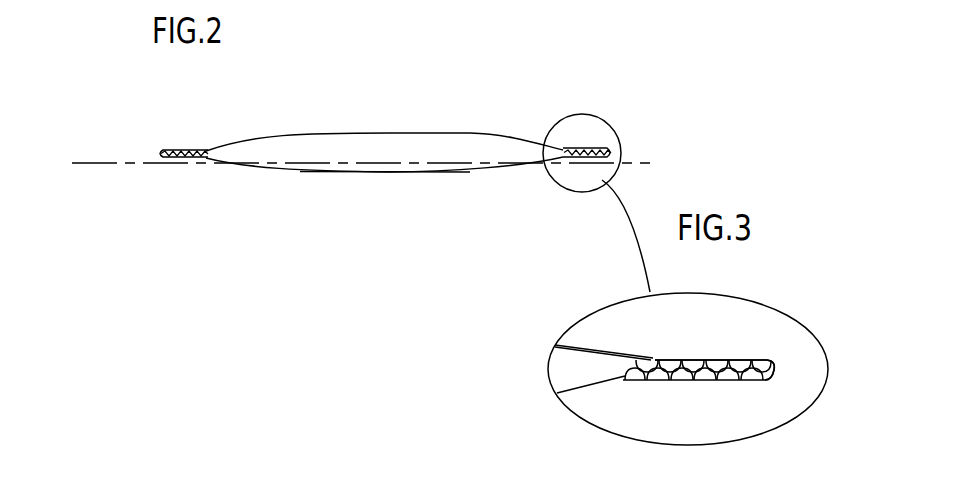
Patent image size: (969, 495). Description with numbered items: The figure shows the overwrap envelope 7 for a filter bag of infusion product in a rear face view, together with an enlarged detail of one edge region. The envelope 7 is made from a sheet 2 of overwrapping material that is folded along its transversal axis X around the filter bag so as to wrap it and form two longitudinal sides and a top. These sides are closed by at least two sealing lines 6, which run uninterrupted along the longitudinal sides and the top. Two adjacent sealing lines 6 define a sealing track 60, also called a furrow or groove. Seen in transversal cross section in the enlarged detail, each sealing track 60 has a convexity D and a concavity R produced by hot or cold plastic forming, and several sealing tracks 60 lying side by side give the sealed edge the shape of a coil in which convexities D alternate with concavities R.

In FIG. 2, the sheet of overwrapping material 2 is at (397, 147).
In FIG. 3, the sheet of overwrapping material 2 is at (585, 365).
In FIG. 2, the overwrap envelope 7 is at (375, 178).
In FIG. 2, the sealing track 60 is at (167, 150).
In FIG. 3, the sealing track 60 is at (748, 358).
In FIG. 3, the sealing lines 6 is at (652, 358).
In FIG. 2, the transversal axis X is at (263, 153).
In FIG. 3, the concavity R is at (761, 357).
In FIG. 3, the convexity D is at (755, 380).